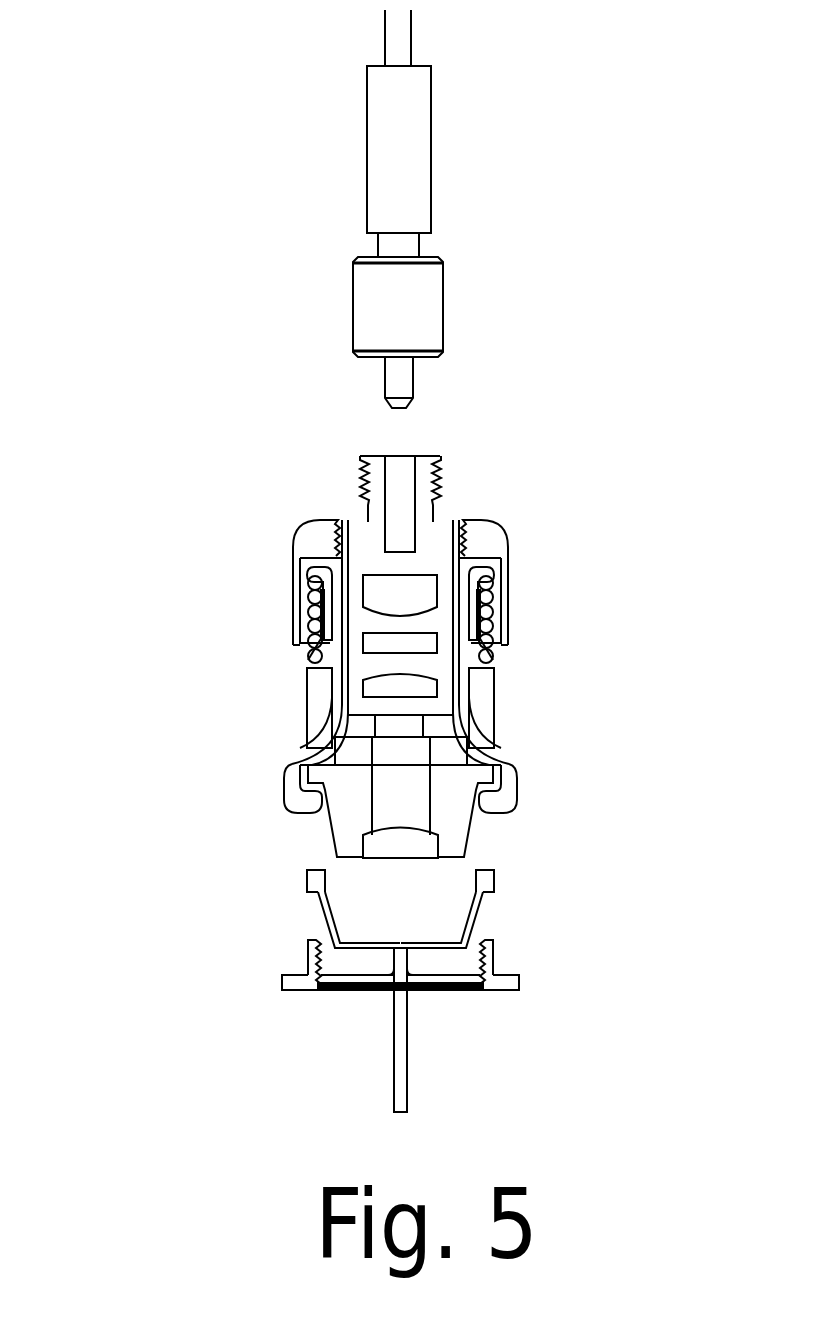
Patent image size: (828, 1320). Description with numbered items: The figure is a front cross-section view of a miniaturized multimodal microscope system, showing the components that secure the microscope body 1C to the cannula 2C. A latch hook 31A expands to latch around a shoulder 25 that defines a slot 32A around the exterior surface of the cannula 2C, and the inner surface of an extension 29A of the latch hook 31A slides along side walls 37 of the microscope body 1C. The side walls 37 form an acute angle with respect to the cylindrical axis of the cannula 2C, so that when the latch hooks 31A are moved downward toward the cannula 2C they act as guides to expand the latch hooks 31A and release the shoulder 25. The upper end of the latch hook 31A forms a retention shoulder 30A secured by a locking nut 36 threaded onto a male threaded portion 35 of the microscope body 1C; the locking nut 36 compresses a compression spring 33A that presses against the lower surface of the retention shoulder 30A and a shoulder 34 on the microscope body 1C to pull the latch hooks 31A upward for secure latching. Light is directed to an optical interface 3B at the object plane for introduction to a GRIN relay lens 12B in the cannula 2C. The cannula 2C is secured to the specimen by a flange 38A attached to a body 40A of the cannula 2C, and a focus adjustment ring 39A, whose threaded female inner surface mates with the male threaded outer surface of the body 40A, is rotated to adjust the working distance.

The male threaded portion 35 is at (466, 532).
The locking nut 36 is at (313, 537).
The microscope body 1C is at (313, 685).
The shoulder 34 is at (313, 633).
The retention shoulder 30A is at (490, 572).
The compression spring 33A is at (500, 648).
The side walls 37 is at (492, 757).
The extension 29A is at (320, 757).
The latch hook 31A is at (512, 805).
The slot 32A is at (310, 902).
The optical interface 3B is at (317, 927).
The shoulder 25 is at (483, 868).
The cannula 2C is at (495, 882).
The focus adjustment ring 39A is at (300, 958).
The flange 38A is at (515, 983).
The body 40A is at (352, 975).
The GRIN relay lens 12B is at (407, 1077).